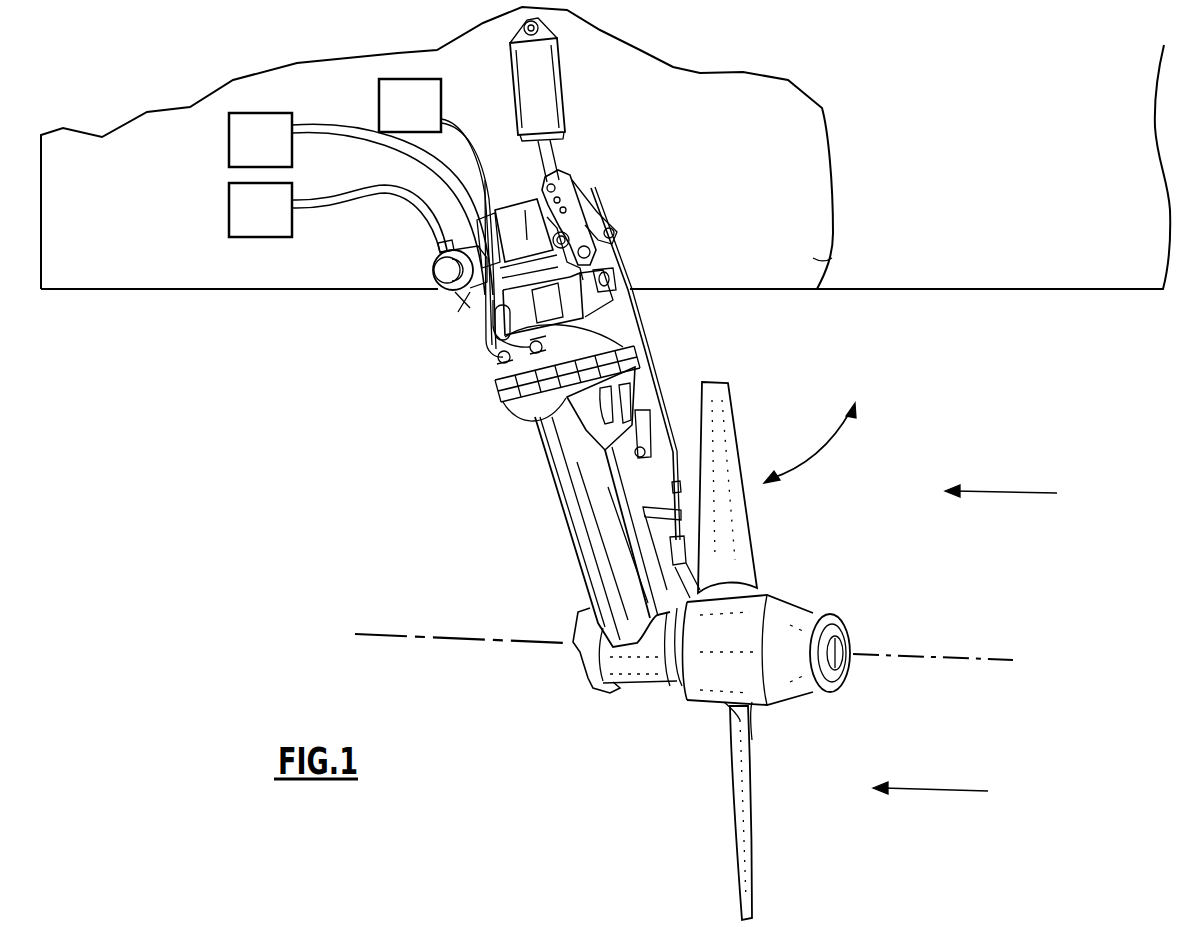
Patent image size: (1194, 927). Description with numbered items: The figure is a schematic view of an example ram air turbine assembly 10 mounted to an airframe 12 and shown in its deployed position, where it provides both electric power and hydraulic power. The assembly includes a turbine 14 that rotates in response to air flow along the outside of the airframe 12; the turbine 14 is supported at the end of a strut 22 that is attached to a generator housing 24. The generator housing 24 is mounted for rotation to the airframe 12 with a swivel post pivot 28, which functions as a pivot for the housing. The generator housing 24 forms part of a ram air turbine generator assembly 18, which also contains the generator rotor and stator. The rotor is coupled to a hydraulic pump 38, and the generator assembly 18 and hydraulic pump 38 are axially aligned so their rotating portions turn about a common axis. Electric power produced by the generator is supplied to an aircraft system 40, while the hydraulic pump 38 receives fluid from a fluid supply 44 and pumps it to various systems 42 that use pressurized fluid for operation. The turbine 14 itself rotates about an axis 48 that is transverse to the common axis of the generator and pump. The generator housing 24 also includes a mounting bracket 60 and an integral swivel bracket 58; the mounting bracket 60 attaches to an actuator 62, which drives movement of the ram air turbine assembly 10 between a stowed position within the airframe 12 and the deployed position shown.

The ram air turbine assembly 10 is at (808, 388).
The airframe 12 is at (833, 262).
The turbine 14 is at (698, 690).
The ram air turbine generator assembly 18 is at (634, 276).
The strut 22 is at (588, 525).
The generator housing 24 is at (585, 315).
The swivel post pivot 28 is at (430, 272).
The hydraulic pump 38 is at (525, 237).
The aircraft system 40 is at (437, 214).
The systems utilizing pressurized fluid 42 is at (361, 204).
The fluid supply 44 is at (341, 218).
The axis 48 is at (978, 656).
The integral swivel bracket 58 is at (473, 300).
The mounting bracket 60 is at (583, 182).
The actuator 62 is at (548, 100).